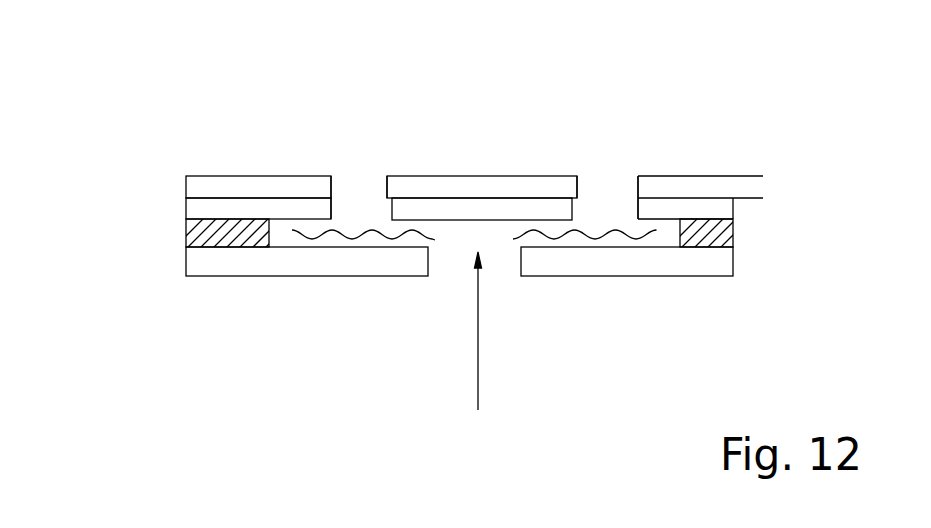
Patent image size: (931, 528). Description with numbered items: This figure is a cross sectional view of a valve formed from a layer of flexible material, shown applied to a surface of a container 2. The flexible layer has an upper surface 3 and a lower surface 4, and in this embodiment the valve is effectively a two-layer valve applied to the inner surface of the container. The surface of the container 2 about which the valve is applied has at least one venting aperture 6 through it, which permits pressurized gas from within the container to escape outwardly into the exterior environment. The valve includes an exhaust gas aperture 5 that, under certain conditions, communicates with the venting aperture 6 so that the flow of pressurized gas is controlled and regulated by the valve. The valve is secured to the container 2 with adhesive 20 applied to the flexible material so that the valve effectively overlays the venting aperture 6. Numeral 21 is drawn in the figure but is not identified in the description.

The container 2 is at (438, 176).
The upper surface 3 is at (186, 210).
The lower surface 4 is at (223, 267).
The exhaust gas aperture 5 is at (500, 268).
The venting aperture 6 is at (377, 189).
The adhesive 20 is at (186, 230).
The flexible membrane 21 is at (365, 225).